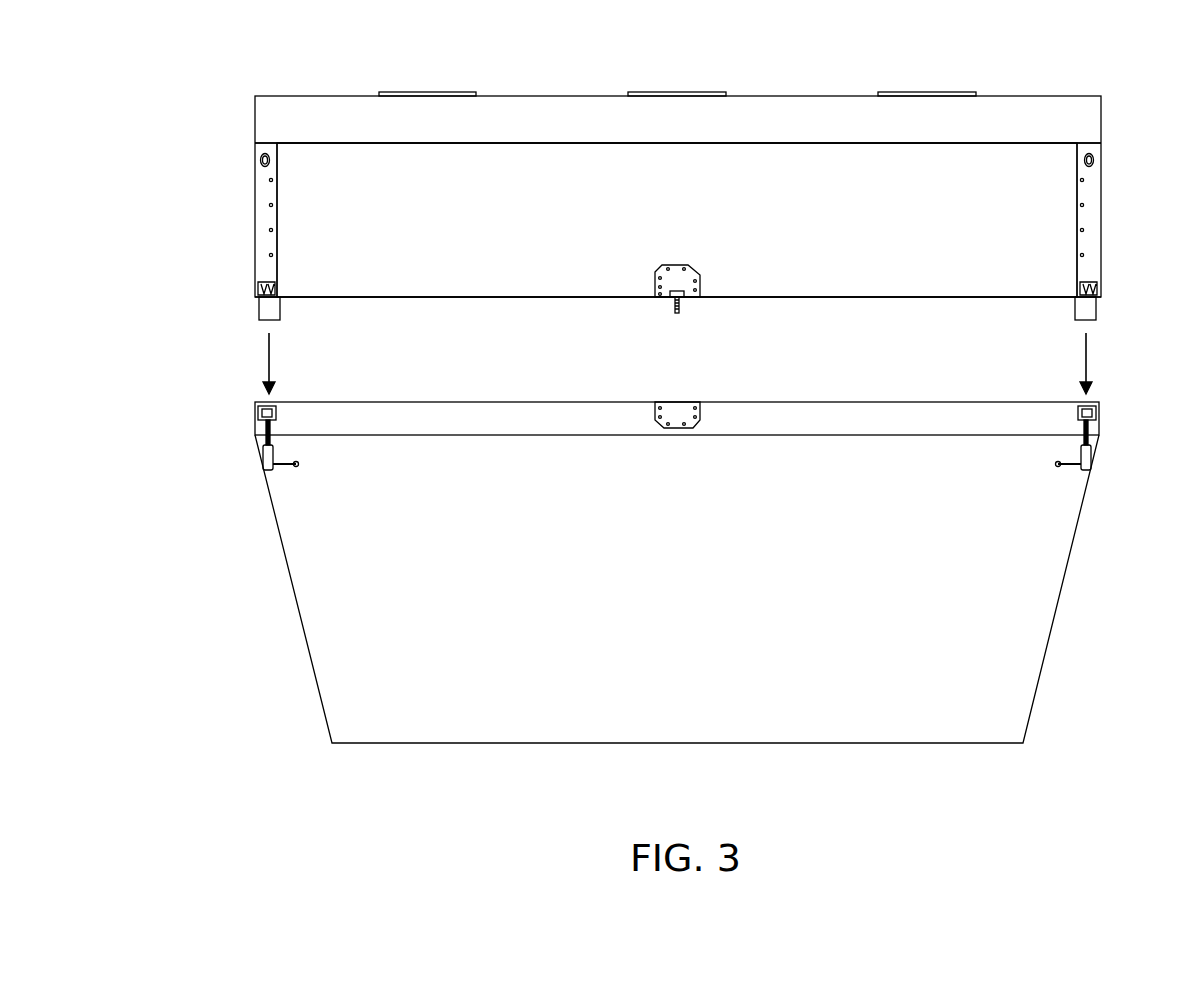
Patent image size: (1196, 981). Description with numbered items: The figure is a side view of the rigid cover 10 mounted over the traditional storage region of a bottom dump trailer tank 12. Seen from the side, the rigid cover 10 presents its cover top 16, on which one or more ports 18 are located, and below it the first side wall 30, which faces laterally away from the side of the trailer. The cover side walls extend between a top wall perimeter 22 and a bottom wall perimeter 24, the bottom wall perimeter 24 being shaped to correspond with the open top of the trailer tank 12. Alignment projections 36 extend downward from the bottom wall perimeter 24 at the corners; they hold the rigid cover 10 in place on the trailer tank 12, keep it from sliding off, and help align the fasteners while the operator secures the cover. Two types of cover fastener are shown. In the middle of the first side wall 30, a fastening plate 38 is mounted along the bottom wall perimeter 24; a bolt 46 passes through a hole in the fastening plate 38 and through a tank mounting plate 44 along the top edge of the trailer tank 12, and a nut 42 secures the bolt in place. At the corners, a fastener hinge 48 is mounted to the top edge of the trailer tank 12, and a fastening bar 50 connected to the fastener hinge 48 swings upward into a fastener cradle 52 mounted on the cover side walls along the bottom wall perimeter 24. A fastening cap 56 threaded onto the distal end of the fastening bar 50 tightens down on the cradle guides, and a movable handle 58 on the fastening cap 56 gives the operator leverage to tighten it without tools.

The rigid cover 10 is at (550, 38).
The bottom dump trailer tank 12 is at (1028, 663).
The cover top 16 is at (263, 128).
The ports 18 is at (685, 93).
The top wall perimeter 22 is at (792, 143).
The bottom wall perimeter 24 is at (923, 298).
The first side wall 30 is at (709, 201).
The alignment projections 36 is at (263, 313).
The fastening plate 38 is at (700, 274).
The nut 42 is at (677, 310).
The tank mounting plate 44 is at (682, 404).
The bolt 46 is at (676, 292).
The fastener hinge 48 is at (262, 408).
The fastening bar 50 is at (268, 438).
The fastener cradle 52 is at (262, 283).
The fastening cap 56 is at (265, 455).
The movable handle 58 is at (296, 470).